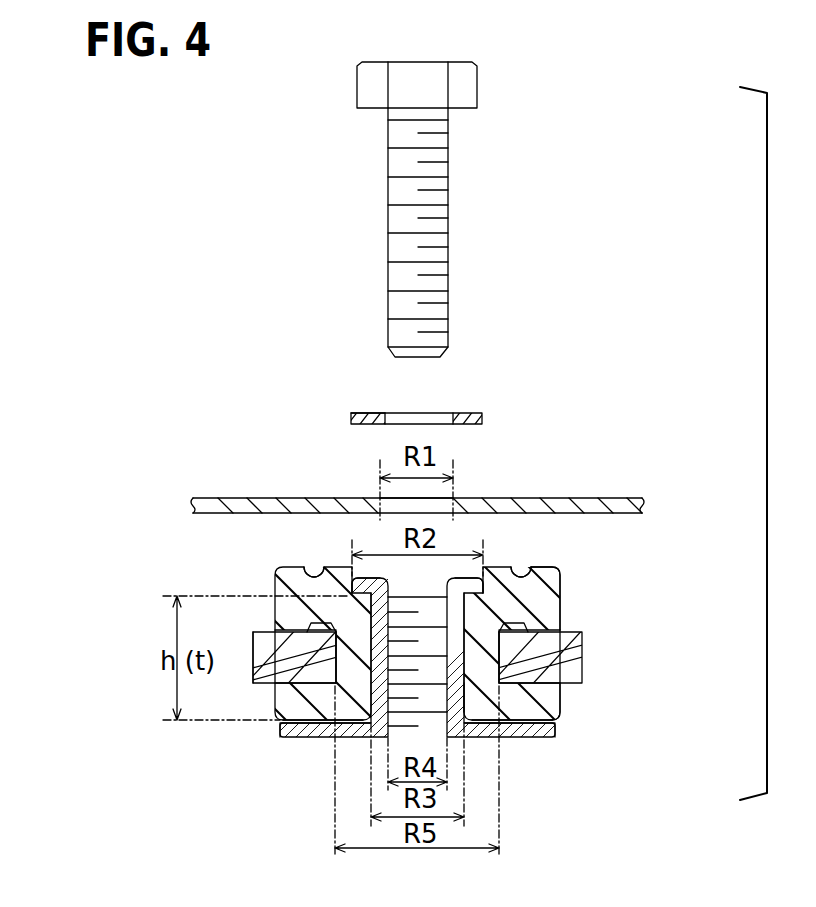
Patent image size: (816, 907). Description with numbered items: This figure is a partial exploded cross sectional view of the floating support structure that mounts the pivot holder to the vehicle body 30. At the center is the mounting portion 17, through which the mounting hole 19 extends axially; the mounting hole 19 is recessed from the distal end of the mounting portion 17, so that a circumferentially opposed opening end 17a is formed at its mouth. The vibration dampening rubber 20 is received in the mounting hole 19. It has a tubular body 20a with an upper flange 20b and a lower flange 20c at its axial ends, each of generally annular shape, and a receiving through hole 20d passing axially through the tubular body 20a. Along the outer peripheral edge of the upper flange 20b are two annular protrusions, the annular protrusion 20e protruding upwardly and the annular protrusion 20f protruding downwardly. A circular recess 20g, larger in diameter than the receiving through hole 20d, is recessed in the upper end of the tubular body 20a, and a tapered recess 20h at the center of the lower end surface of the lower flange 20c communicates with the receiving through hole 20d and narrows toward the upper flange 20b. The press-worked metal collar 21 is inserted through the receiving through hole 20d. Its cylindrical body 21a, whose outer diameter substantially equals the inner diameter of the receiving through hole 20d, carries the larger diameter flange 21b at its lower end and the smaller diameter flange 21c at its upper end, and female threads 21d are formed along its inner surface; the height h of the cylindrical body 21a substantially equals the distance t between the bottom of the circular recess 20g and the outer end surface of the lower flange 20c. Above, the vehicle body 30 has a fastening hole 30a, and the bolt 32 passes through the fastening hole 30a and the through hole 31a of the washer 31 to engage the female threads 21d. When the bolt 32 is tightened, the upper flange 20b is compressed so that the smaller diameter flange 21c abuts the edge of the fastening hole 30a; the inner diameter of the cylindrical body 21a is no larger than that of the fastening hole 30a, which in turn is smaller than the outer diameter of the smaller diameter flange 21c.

The bolt 32 is at (478, 90).
The washer 31 is at (467, 412).
The through hole of washer 31a is at (385, 412).
The vehicle body 30 is at (612, 498).
The fastening hole 30a is at (453, 505).
The vibration dampening rubber 20 is at (265, 592).
The tubular body 20a is at (545, 716).
The upper flange 20b is at (560, 606).
The lower flange 20c is at (548, 737).
The receiving through hole 20d is at (337, 722).
The annular protrusion 20e is at (290, 572).
The annular protrusion 20f is at (277, 626).
The circular recess 20g is at (502, 570).
The tapered recess 20h is at (483, 715).
The collar 21 is at (272, 738).
The cylindrical body 21a is at (547, 572).
The larger diameter flange 21b is at (320, 738).
The smaller diameter flange 21c is at (352, 580).
The female threads 21d is at (527, 738).
The mounting portion 17 is at (592, 666).
The opening end 17a is at (253, 648).
The mounting hole 19 is at (253, 673).